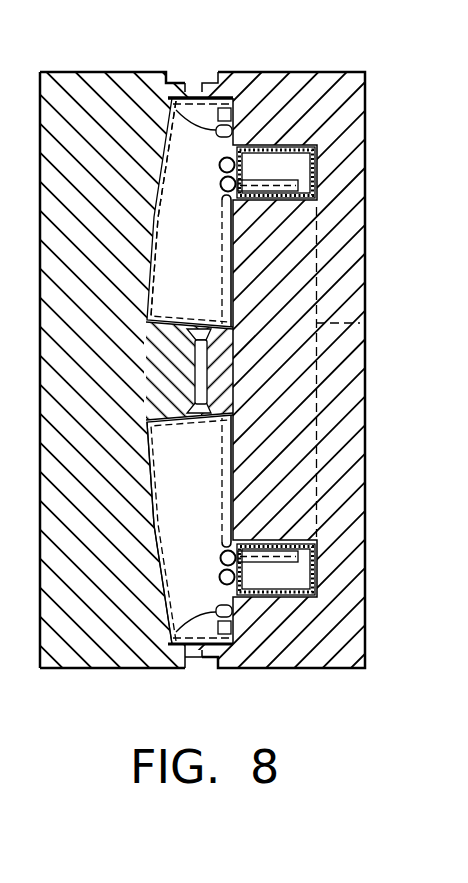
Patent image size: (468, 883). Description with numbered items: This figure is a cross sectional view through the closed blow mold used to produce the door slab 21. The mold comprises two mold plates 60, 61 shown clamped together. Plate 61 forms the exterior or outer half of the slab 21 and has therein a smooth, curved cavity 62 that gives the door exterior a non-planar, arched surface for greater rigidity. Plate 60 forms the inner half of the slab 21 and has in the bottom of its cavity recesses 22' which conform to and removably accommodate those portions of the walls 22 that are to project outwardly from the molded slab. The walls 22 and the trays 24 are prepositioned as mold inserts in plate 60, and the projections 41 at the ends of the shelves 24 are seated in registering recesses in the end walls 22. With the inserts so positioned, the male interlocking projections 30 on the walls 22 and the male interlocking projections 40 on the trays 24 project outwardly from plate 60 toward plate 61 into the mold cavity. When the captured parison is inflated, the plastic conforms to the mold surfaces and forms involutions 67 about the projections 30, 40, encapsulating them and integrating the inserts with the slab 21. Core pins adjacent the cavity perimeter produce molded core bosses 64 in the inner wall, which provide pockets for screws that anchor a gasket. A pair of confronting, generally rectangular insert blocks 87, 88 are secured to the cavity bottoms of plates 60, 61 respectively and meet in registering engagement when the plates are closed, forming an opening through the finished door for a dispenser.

The mold plate 60 is at (298, 72).
The mold plate 61 is at (117, 72).
The molded core bosses 64 is at (167, 73).
The recesses 22' is at (329, 346).
The walls 22 is at (324, 371).
The projections 41 is at (286, 182).
The male interlocking projections 30 is at (216, 174).
The door slab 21 is at (153, 268).
The involutions 67 is at (218, 288).
The male interlocking projections 40 is at (240, 264).
The trays 24 is at (368, 311).
The insert block 88 is at (160, 362).
The insert block 87 is at (237, 362).
The curved cavity 62 is at (160, 558).